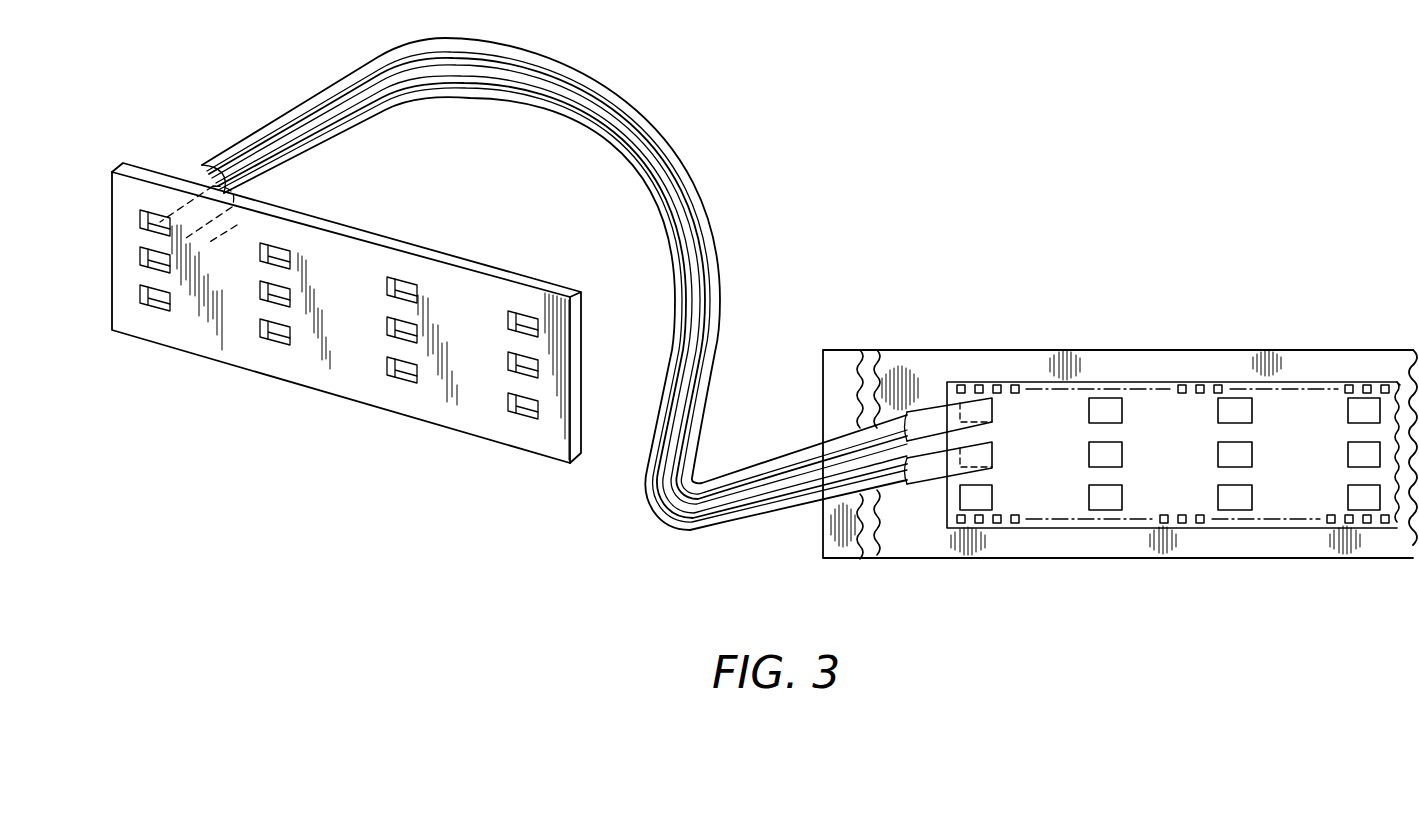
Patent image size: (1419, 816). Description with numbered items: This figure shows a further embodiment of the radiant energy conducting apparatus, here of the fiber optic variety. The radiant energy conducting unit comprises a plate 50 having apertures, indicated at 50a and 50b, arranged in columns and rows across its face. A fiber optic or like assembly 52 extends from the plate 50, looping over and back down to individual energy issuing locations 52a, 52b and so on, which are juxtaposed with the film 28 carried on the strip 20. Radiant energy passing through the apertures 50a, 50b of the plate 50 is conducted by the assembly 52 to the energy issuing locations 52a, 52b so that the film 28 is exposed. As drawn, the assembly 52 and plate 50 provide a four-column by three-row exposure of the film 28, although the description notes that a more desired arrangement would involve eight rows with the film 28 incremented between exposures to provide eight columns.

The carrier tape 20 is at (1310, 362).
The film 28 is at (1147, 384).
The plate 50 is at (426, 256).
The aperture 50a is at (149, 215).
The aperture 50b is at (146, 258).
The fiber optic assembly 52 is at (594, 86).
The energy issuing location 52a is at (986, 399).
The energy issuing location 52b is at (994, 452).